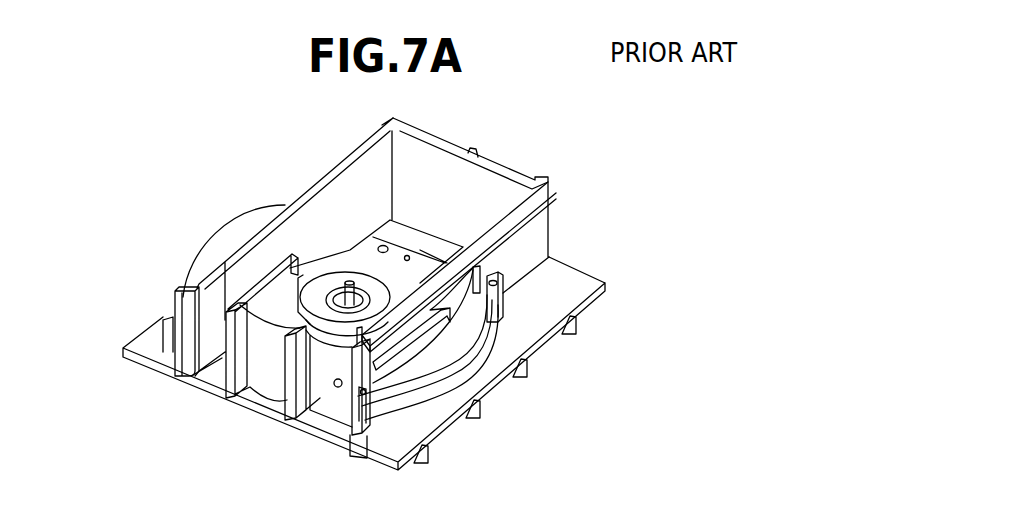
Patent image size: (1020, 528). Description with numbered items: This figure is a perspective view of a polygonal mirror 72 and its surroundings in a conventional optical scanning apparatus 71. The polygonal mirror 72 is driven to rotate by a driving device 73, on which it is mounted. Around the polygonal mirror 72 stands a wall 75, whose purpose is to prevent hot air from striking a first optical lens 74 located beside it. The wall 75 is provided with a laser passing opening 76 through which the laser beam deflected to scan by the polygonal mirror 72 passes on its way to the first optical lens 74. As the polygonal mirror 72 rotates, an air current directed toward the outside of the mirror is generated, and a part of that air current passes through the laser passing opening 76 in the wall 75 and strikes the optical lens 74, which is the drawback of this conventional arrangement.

The optical scanning apparatus 71 is at (157, 316).
The polygonal mirror 72 is at (326, 283).
The driving device 73 is at (420, 267).
The first optical lens 74 is at (445, 347).
The wall 75 is at (520, 253).
The laser passing opening 76 is at (443, 305).